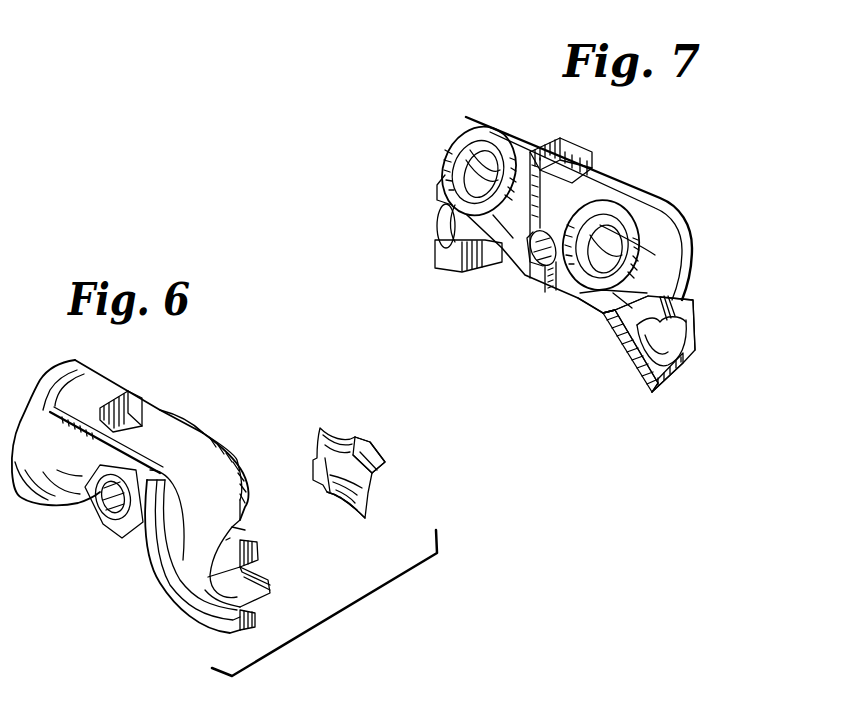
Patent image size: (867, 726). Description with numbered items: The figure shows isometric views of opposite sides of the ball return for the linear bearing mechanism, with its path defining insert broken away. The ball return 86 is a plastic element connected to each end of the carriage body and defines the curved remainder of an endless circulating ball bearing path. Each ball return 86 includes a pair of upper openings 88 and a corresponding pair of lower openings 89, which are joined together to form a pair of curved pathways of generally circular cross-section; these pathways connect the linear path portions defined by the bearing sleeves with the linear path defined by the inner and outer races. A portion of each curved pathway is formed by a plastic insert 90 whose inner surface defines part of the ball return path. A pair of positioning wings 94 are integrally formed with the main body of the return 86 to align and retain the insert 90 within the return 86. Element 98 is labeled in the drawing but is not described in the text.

In FIG. 6, the ball return element 86 is at (182, 558).
In FIG. 7, the ball return element 86 is at (606, 185).
In FIG. 7, the upper openings 88 is at (450, 172).
In FIG. 7, the lower openings 89 is at (440, 222).
In FIG. 6, the plastic insert 90 is at (353, 440).
In FIG. 7, the plastic insert 90 is at (447, 264).
In FIG. 6, the positioning wings 94 is at (308, 476).
In FIG. 7, the positioning wings 94 is at (595, 312).
In FIG. 6, the curved retainer insert 98 is at (328, 493).